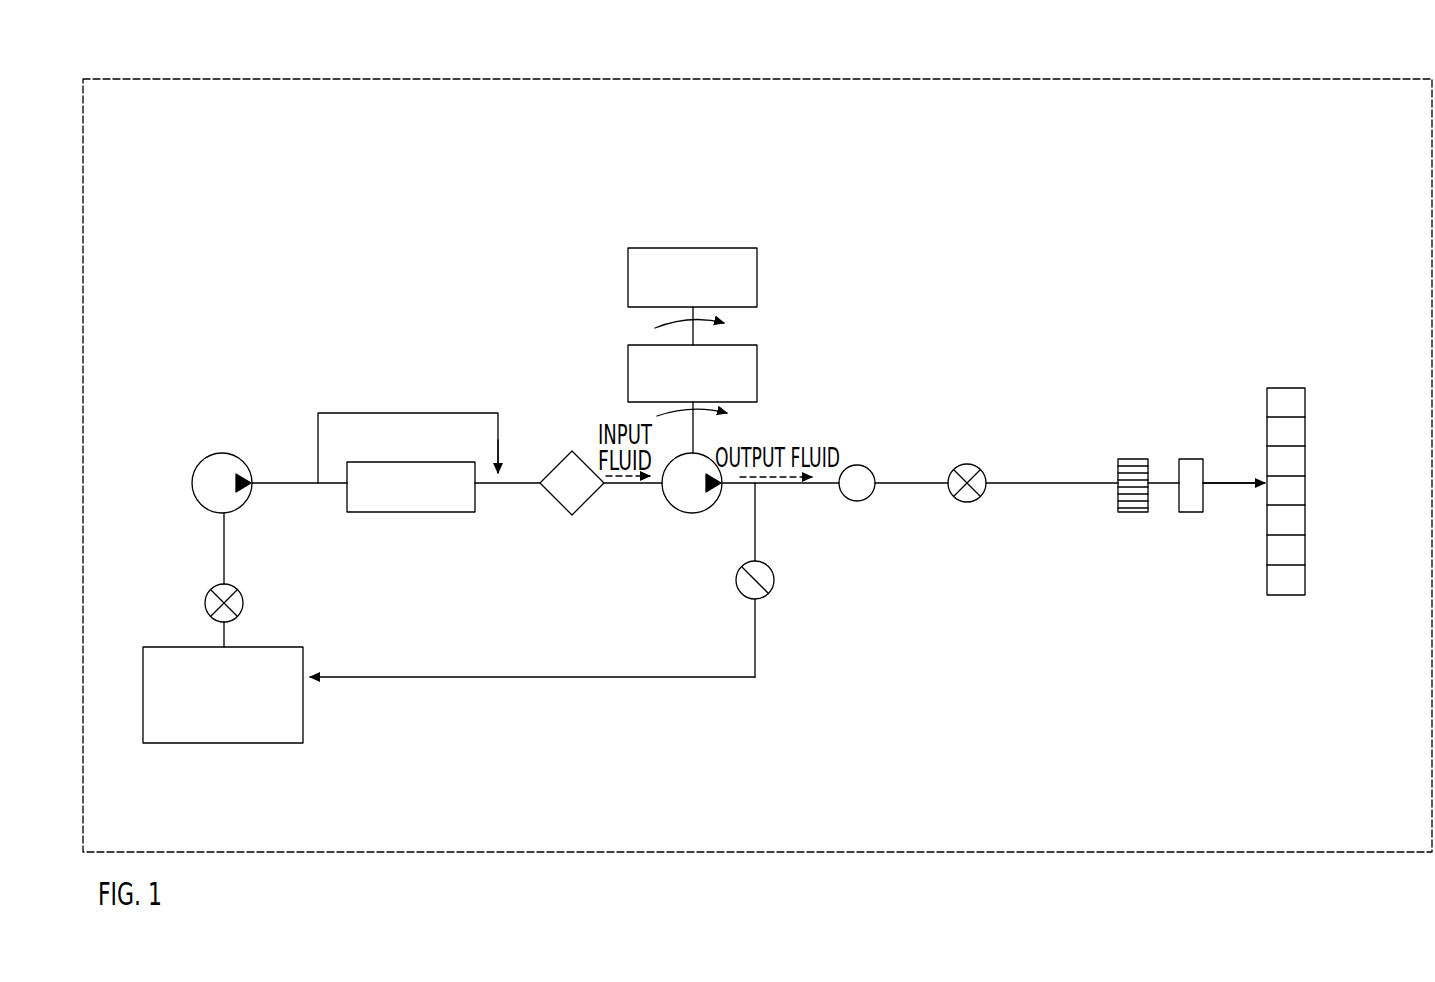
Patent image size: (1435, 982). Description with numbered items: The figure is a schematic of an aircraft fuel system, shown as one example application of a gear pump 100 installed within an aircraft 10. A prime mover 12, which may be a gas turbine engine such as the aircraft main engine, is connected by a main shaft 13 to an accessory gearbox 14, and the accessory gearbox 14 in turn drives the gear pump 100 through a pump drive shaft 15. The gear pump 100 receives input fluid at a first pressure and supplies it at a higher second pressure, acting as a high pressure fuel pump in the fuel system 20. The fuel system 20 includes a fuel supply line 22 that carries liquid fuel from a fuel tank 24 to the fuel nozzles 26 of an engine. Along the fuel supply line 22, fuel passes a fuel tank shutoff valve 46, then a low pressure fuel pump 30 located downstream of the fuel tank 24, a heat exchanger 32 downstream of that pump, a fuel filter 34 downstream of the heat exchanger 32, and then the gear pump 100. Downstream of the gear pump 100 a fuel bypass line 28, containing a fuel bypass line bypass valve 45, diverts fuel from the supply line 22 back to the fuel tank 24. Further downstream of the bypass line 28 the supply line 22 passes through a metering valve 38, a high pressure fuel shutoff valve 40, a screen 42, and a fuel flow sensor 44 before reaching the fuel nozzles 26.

The aircraft 10 is at (474, 78).
The prime mover 12 is at (757, 248).
The main shaft 13 is at (693, 337).
The accessory gearbox 14 is at (757, 345).
The pump drive shaft 15 is at (693, 438).
The fuel system 20 is at (1296, 345).
The fuel supply line 22 is at (222, 548).
The fuel tank 24 is at (223, 743).
The fuel nozzles 26 is at (1305, 514).
The fuel bypass line 28 is at (585, 677).
The low pressure fuel pump 30 is at (243, 460).
The heat exchanger 32 is at (424, 512).
The fuel filter 34 is at (580, 450).
The metering valve 38 is at (870, 470).
The high pressure fuel shutoff valve 40 is at (985, 472).
The screen 42 is at (1133, 459).
The fuel flow sensor 44 is at (1190, 459).
The fuel bypass line bypass valve 45 is at (770, 566).
The fuel tank shutoff valve 46 is at (240, 614).
The gear pump 100 is at (688, 513).